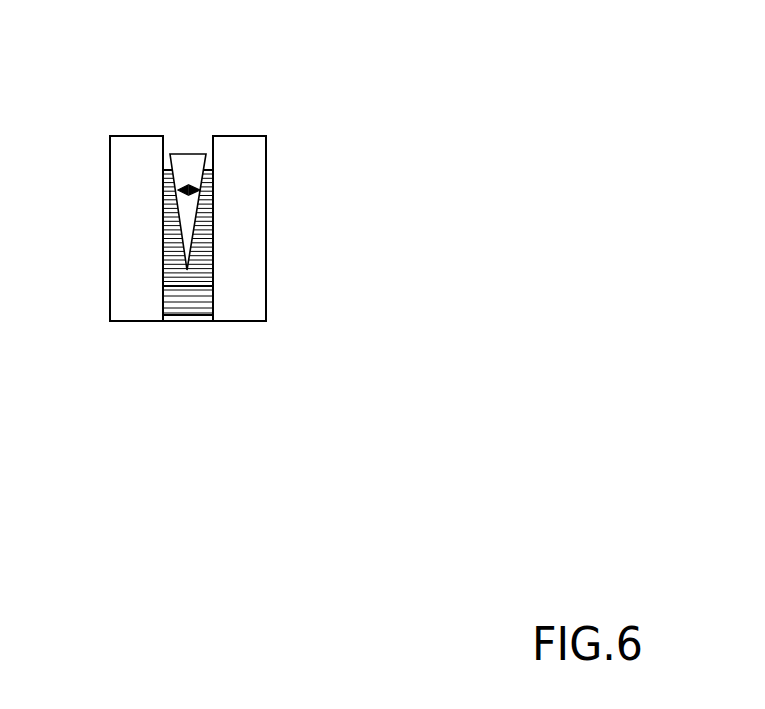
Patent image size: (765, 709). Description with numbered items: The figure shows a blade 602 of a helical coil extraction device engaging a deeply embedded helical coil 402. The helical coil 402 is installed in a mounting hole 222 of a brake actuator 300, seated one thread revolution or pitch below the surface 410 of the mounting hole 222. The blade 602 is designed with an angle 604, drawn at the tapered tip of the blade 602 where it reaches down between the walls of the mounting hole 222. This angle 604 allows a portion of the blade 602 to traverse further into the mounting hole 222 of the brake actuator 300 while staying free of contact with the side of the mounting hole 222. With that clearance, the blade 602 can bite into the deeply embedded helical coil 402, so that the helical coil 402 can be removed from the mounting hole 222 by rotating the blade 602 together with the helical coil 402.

The surface 410 is at (132, 136).
The mounting hole 222 is at (158, 148).
The brake actuator 300 is at (237, 220).
The helical coil 402 is at (198, 268).
The blade 602 is at (200, 163).
The angle 604 is at (188, 190).